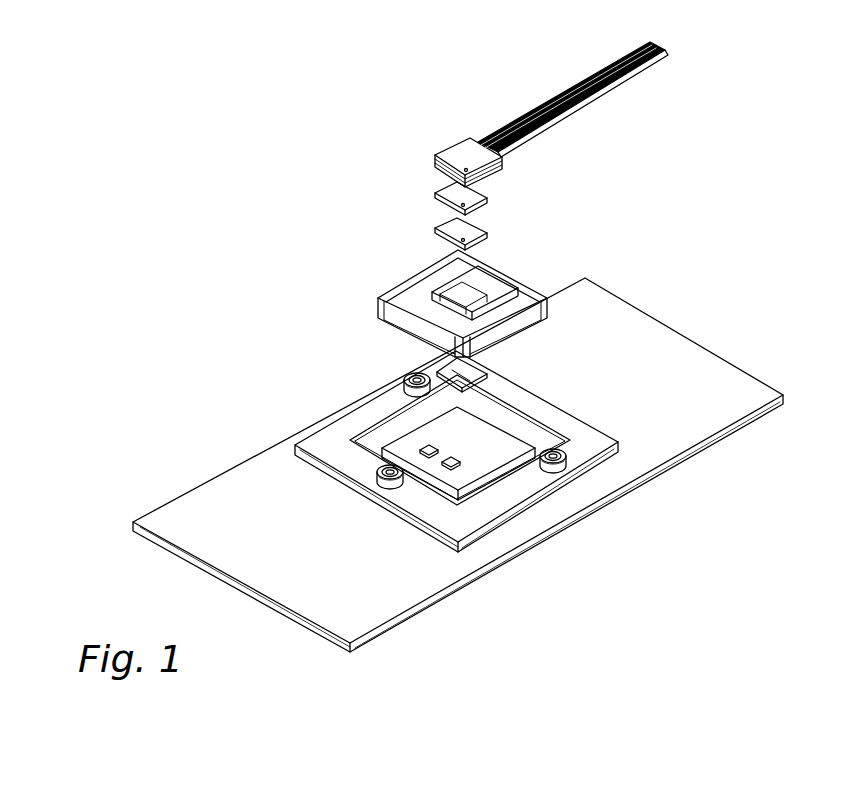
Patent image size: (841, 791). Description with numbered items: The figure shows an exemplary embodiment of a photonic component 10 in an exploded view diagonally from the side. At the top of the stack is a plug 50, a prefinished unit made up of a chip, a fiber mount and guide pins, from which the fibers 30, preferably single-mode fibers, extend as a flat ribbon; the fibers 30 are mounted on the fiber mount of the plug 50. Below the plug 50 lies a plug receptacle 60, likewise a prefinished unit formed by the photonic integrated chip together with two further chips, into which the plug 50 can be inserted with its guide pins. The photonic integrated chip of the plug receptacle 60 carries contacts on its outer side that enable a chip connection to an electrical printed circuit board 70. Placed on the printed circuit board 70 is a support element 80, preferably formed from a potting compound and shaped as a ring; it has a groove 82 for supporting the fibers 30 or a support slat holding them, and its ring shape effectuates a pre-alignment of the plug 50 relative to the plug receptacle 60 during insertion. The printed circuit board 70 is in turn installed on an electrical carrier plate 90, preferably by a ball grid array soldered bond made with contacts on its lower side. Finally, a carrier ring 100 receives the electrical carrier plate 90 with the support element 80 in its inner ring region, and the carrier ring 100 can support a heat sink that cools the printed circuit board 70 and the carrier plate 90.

The photonic component 10 is at (186, 252).
The fibers 30 is at (591, 79).
The plug 50 is at (419, 147).
The plug receptacle 60 is at (503, 206).
The printed circuit board 70 is at (498, 448).
The support element 80 is at (456, 292).
The groove 82 is at (493, 283).
The electrical carrier plate 90 is at (703, 415).
The carrier ring 100 is at (520, 487).